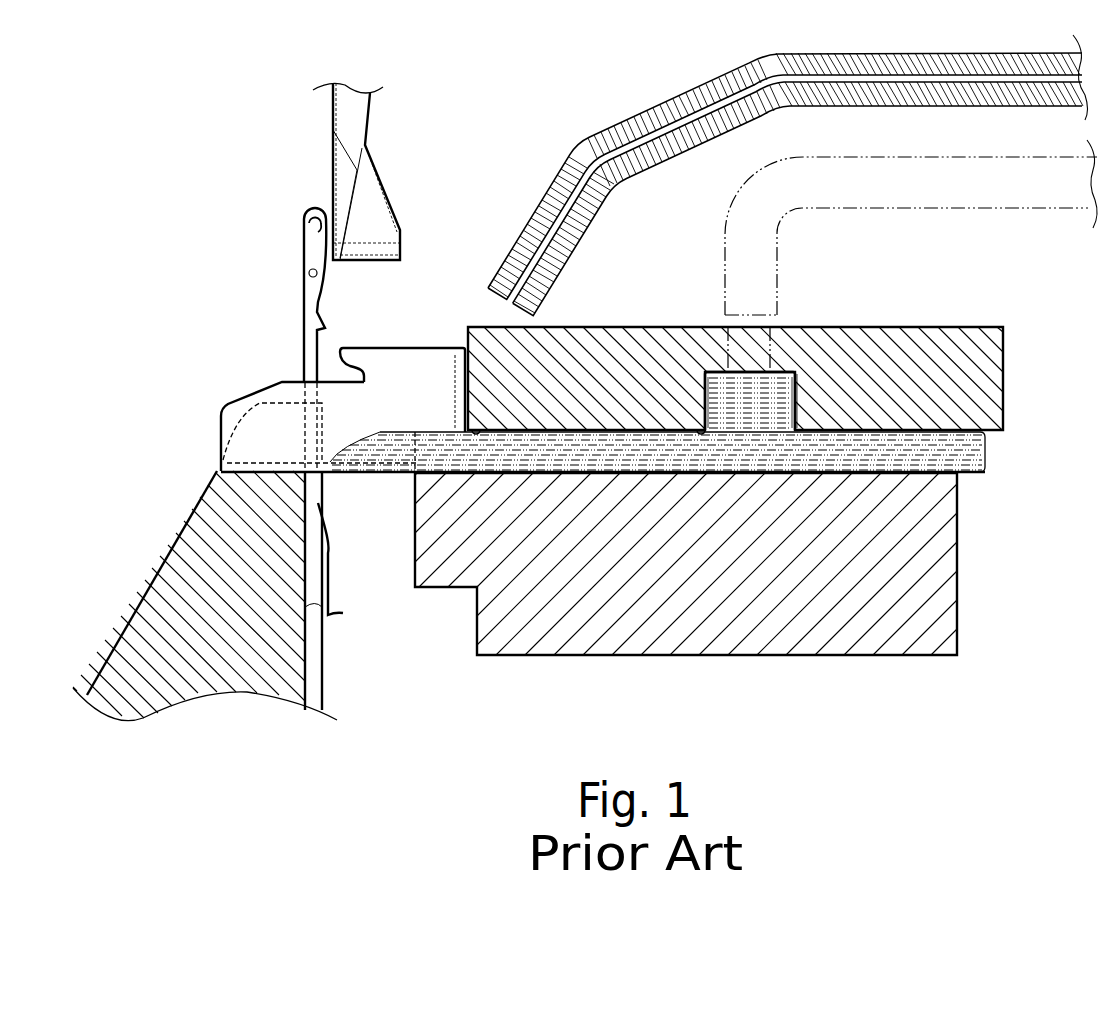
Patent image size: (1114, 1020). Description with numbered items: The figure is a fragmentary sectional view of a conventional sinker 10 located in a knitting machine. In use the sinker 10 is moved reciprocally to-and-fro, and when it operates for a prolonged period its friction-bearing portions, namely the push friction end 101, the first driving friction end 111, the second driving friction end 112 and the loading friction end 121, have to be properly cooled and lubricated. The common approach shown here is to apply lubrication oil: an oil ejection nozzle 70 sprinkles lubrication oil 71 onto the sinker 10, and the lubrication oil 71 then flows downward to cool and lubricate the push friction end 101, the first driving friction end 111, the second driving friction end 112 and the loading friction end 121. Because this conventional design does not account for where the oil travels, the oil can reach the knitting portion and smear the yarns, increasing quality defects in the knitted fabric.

The sinker 10 is at (612, 463).
The oil ejection nozzle 70 is at (557, 167).
The lubrication oil 71 is at (387, 404).
The push friction end 101 is at (481, 382).
The first driving friction end 111 is at (683, 390).
The second driving friction end 112 is at (800, 408).
The loading friction end 121 is at (720, 473).